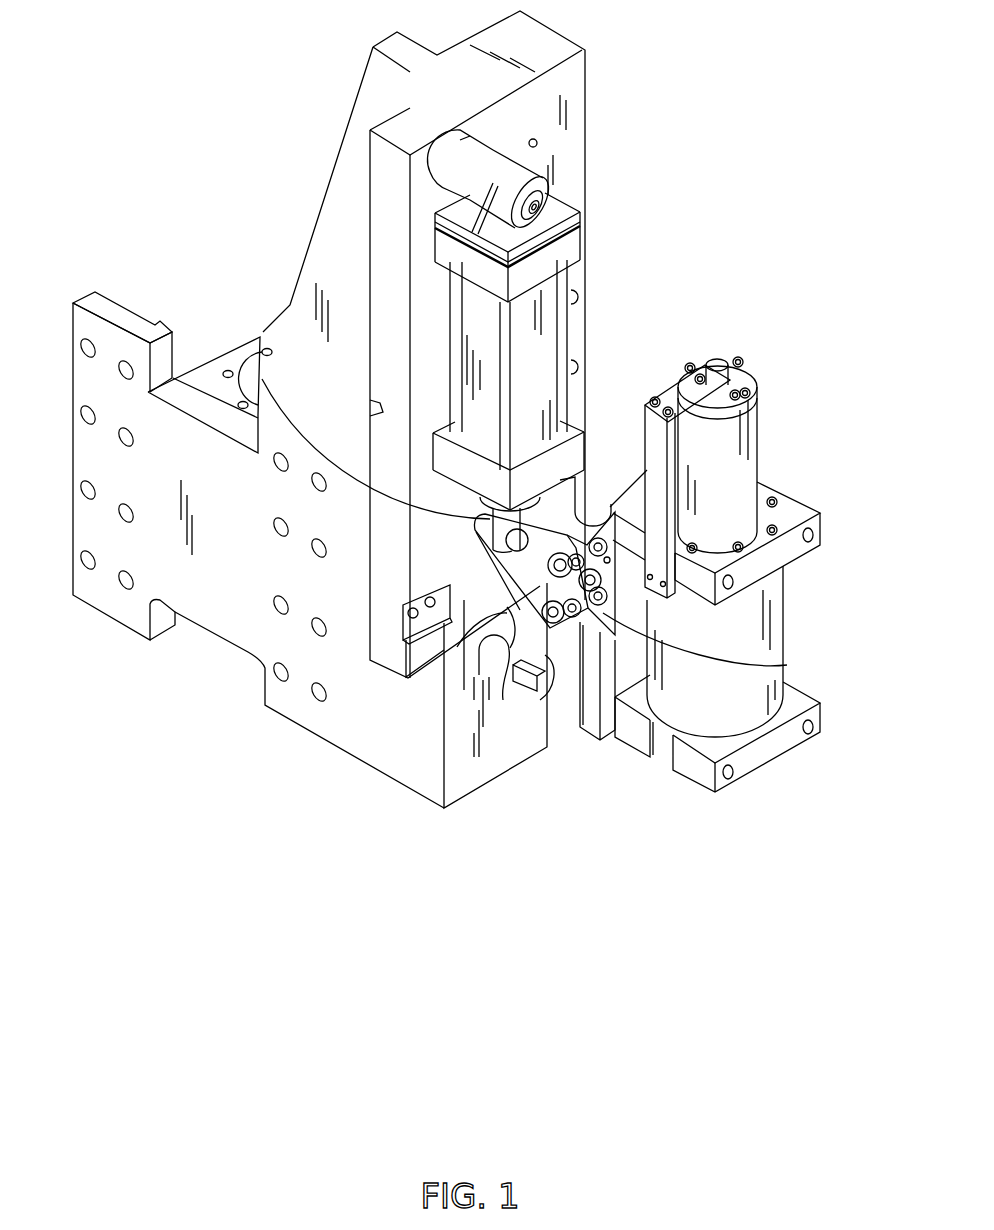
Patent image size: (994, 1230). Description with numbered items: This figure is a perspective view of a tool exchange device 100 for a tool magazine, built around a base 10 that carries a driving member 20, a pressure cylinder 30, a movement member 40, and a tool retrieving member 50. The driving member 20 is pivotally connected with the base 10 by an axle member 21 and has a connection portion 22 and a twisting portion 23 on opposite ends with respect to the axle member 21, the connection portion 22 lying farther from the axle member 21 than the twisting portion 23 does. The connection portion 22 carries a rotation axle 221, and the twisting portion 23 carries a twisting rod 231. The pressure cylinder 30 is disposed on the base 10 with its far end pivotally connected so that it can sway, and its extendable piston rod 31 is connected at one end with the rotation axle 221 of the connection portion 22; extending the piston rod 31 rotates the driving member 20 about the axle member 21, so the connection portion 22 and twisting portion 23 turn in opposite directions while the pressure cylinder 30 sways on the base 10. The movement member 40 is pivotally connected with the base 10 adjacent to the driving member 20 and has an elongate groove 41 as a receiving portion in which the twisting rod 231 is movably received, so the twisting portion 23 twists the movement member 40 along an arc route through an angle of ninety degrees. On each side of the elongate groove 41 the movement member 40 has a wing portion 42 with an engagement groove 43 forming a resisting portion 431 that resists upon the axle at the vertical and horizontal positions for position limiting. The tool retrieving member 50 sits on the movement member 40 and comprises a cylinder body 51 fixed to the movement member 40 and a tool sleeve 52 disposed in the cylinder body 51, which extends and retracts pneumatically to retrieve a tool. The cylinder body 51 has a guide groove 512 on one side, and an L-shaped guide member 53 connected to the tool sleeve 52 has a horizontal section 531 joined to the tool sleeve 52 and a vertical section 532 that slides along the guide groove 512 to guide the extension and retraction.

The tool exchange device 100 is at (702, 112).
The base 10 is at (325, 240).
The driving member 20 is at (450, 640).
The axle member 21 is at (595, 540).
The connection portion 22 is at (475, 530).
The rotation axle 221 is at (404, 680).
The twisting portion 23 is at (576, 645).
The twisting rod 231 is at (466, 620).
The pressure cylinder 30 is at (468, 302).
The piston rod 31 is at (288, 418).
The movement member 40 is at (543, 660).
The elongate groove 41 is at (787, 665).
The wing portion 42 is at (580, 640).
The engagement groove 43 is at (505, 655).
The resisting portion 431 is at (519, 672).
The tool retrieving member 50 is at (777, 637).
The cylinder body 51 is at (797, 510).
The guide groove 512 is at (664, 752).
The tool sleeve 52 is at (747, 440).
The guide member 53 is at (667, 262).
The horizontal section 531 is at (670, 387).
The vertical section 532 is at (645, 410).